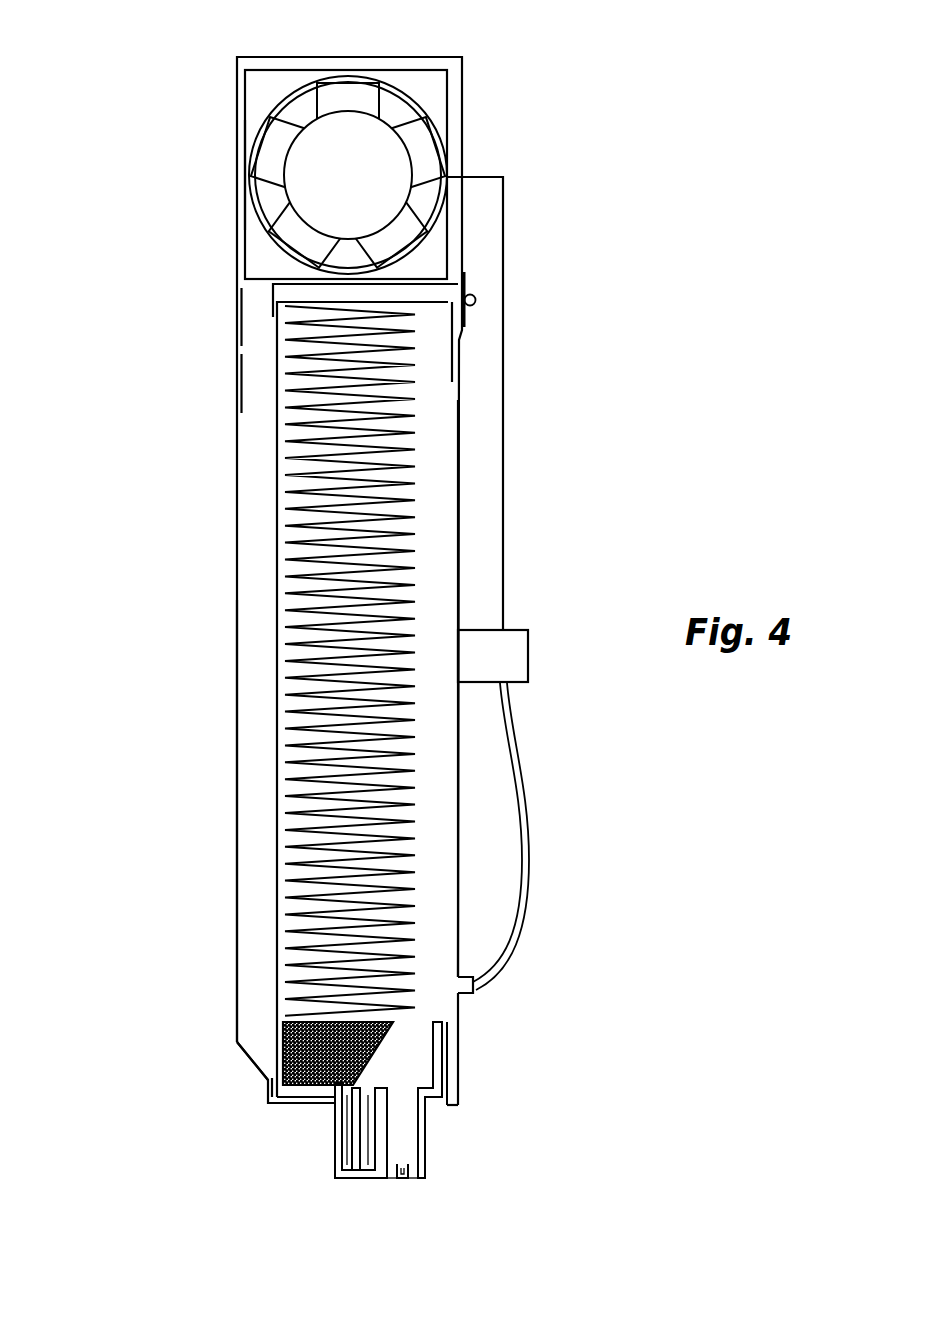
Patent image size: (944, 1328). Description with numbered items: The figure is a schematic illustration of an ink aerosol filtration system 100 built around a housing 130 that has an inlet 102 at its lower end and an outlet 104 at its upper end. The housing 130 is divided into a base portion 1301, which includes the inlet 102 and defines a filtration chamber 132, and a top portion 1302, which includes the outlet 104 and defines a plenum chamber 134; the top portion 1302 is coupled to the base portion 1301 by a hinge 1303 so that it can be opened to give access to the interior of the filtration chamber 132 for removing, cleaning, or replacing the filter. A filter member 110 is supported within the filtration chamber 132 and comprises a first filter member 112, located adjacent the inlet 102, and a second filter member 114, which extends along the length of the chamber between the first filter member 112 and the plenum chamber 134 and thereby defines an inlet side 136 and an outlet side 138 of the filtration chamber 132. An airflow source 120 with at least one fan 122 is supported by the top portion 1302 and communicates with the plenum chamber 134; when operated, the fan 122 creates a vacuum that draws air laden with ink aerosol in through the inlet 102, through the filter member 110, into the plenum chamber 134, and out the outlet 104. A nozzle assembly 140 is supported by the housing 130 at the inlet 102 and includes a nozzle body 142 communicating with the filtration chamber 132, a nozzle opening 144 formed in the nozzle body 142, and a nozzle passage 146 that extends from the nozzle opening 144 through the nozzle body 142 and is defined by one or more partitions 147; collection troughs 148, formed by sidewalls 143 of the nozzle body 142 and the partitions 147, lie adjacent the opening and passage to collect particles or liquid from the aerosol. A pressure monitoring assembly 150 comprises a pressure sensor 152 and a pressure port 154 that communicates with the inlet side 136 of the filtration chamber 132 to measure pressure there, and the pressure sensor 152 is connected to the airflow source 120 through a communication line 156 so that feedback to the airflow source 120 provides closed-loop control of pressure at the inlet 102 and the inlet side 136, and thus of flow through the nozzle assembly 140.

The filtration system 100 is at (140, 56).
The inlet 102 is at (270, 1132).
The outlet 104 is at (353, 147).
The filter member 110 is at (340, 690).
The first filter member 112 is at (322, 1052).
The second filter member 114 is at (290, 742).
The airflow source 120 is at (381, 145).
The fan 122 is at (345, 95).
The housing 130 is at (215, 330).
The base portion 1301 is at (238, 433).
The top portion 1302 is at (239, 178).
The hinge 1303 is at (476, 297).
The filtration chamber 132 is at (293, 661).
The plenum chamber 134 is at (262, 258).
The inlet side 136 is at (436, 884).
The outlet side 138 is at (258, 828).
The nozzle assembly 140 is at (426, 1136).
The nozzle body 142 is at (428, 1118).
The sidewall 143 is at (423, 1142).
The nozzle opening 144 is at (392, 1178).
The nozzle passage 146 is at (393, 1152).
The partition 147 is at (382, 1115).
The collection trough 148 is at (367, 1165).
The pressure monitoring assembly 150 is at (551, 783).
The pressure sensor 152 is at (515, 660).
The pressure port 154 is at (474, 988).
The communication line 156 is at (505, 460).